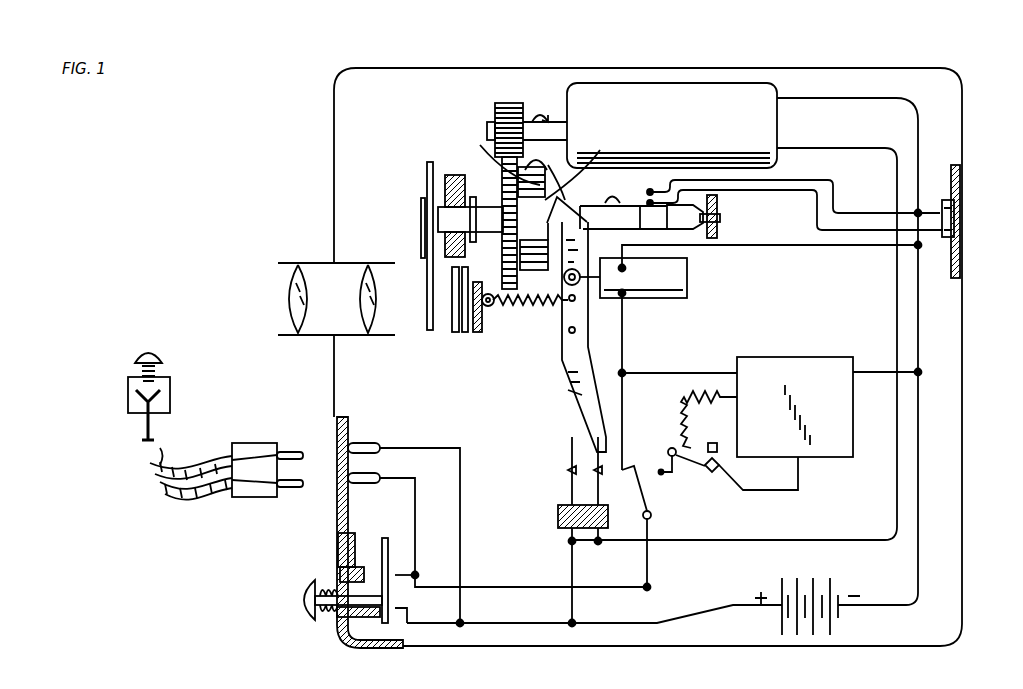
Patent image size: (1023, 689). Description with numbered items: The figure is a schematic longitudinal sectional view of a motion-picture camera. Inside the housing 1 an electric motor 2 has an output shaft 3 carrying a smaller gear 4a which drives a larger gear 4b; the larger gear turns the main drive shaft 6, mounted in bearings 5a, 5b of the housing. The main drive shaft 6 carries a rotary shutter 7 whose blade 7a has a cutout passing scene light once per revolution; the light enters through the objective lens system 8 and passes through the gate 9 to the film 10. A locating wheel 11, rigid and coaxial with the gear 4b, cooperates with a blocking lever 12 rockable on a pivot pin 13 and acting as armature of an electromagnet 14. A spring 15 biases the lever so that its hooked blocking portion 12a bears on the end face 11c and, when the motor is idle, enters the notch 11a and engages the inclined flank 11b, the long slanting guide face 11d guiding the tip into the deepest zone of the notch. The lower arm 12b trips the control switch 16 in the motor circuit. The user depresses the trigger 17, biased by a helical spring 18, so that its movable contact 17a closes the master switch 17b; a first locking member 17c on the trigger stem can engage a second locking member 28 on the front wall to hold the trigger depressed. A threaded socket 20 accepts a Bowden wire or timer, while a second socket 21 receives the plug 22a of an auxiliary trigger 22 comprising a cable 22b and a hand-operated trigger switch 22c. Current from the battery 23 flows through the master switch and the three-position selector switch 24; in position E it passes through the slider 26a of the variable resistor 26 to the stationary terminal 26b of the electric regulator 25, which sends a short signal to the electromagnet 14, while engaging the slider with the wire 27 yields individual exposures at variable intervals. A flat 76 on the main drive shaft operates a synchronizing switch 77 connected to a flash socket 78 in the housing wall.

The housing 1 is at (964, 325).
The electric motor 2 is at (700, 100).
The output shaft 3 is at (540, 118).
The smaller gear 4a is at (508, 103).
The larger gear 4b is at (512, 162).
The bearing 5a is at (450, 185).
The bearing 5b is at (722, 229).
The main drive shaft 6 is at (624, 204).
The rotary shutter 7 is at (426, 190).
The shutter blade 7a is at (426, 285).
The objective lens system 8 is at (285, 276).
The gate 9 is at (452, 322).
The motion-picture film 10 is at (465, 328).
The locating wheel 11 is at (530, 303).
The notch 11a is at (520, 178).
The inclined flank 11b is at (565, 212).
The end face 11c is at (562, 170).
The slanting guide face 11d is at (605, 150).
The blocking lever 12 is at (580, 247).
The blocking portion 12a is at (530, 218).
The lower arm 12b is at (582, 400).
The pivot pin 13 is at (568, 335).
The electromagnet 14 is at (690, 284).
The spring 15 is at (482, 318).
The control switch 16 is at (570, 454).
The trigger 17 is at (300, 602).
The movable contact 17a is at (390, 552).
The master switch 17b is at (398, 593).
The first locking member 17c is at (380, 560).
The helical spring 18 is at (326, 612).
The threaded socket 20 is at (338, 548).
The second socket 21 is at (385, 462).
The auxiliary trigger 22 is at (172, 378).
The plug 22a is at (257, 443).
The cable 22b is at (182, 495).
The trigger switch 22c is at (148, 384).
The battery 23 is at (824, 580).
The selector switch 24 is at (649, 478).
The electric regulator 25 is at (834, 358).
The variable resistor 26 is at (707, 478).
The slider 26a is at (686, 463).
The stationary terminal 26b is at (722, 465).
The wire 27 is at (680, 407).
The second locking member 28 is at (345, 569).
The flat 76 is at (665, 228).
The synchronizing switch 77 is at (643, 196).
The socket 78 is at (958, 212).